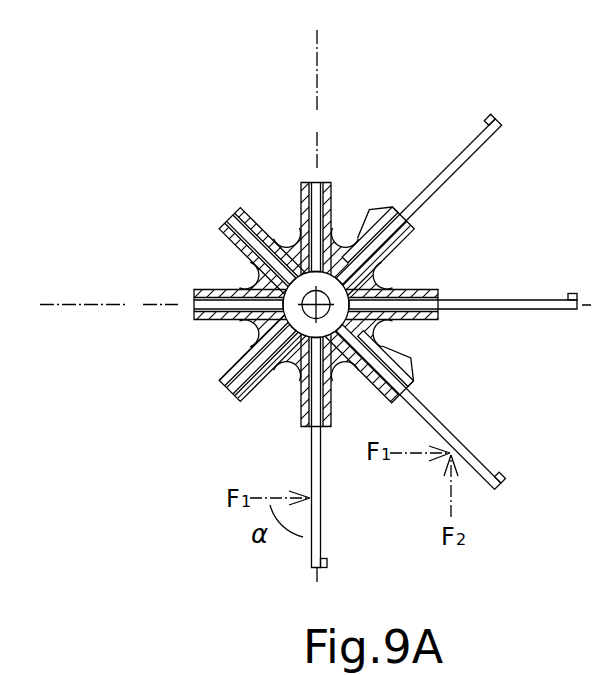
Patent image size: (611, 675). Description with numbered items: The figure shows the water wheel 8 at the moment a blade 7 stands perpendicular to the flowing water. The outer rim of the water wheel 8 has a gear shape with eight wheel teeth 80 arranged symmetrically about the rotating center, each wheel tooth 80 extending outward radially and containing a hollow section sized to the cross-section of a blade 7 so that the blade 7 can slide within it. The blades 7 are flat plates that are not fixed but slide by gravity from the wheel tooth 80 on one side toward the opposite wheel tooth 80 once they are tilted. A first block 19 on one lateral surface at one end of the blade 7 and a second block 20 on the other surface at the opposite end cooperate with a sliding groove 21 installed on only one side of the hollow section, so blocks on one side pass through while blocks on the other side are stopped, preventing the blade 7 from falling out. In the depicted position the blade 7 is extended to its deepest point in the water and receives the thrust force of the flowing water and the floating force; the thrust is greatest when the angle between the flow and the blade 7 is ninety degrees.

The blade 7 is at (473, 154).
The water wheel 8 is at (187, 244).
The first block 19 is at (493, 112).
The second block 20 is at (377, 273).
The sliding groove 21 is at (398, 208).
The wheel tooth 80 is at (374, 228).